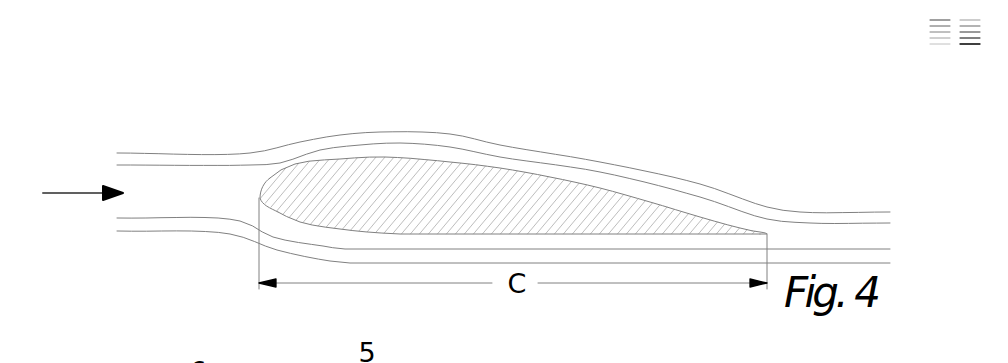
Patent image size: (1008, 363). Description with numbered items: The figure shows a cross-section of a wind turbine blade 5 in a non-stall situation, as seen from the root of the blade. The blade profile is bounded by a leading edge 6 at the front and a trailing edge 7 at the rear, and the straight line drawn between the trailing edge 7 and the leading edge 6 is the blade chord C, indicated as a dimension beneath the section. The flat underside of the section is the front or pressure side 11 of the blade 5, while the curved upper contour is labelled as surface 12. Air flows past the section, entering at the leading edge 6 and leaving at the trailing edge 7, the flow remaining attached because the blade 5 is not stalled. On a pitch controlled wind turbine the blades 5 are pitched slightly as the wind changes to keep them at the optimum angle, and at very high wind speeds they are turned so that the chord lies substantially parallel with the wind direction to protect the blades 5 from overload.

The wind turbine blade 5 is at (380, 180).
The leading edge 6 is at (263, 183).
The trailing edge 7 is at (788, 210).
The pressure side 11 is at (437, 234).
The upper surface 12 is at (490, 163).